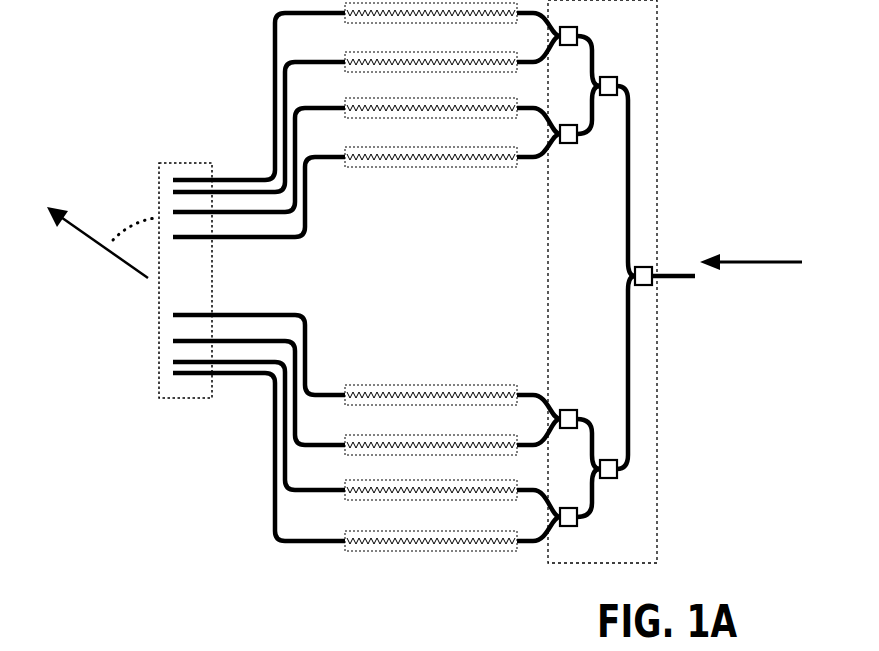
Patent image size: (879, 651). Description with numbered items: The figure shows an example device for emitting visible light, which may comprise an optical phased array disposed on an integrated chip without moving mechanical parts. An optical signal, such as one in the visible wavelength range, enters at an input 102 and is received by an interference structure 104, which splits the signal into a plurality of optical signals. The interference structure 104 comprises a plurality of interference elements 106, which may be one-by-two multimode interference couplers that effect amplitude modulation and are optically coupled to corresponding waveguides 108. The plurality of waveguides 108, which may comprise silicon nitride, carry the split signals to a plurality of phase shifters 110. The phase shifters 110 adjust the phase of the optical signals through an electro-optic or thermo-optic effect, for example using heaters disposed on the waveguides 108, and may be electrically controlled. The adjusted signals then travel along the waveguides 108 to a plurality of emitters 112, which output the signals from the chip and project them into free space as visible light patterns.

The input 102 is at (677, 285).
The interference structure 104 is at (657, 40).
The interference elements 106 is at (608, 480).
The waveguides 108 is at (265, 82).
The phase shifters 110 is at (452, 170).
The emitters 112 is at (182, 400).